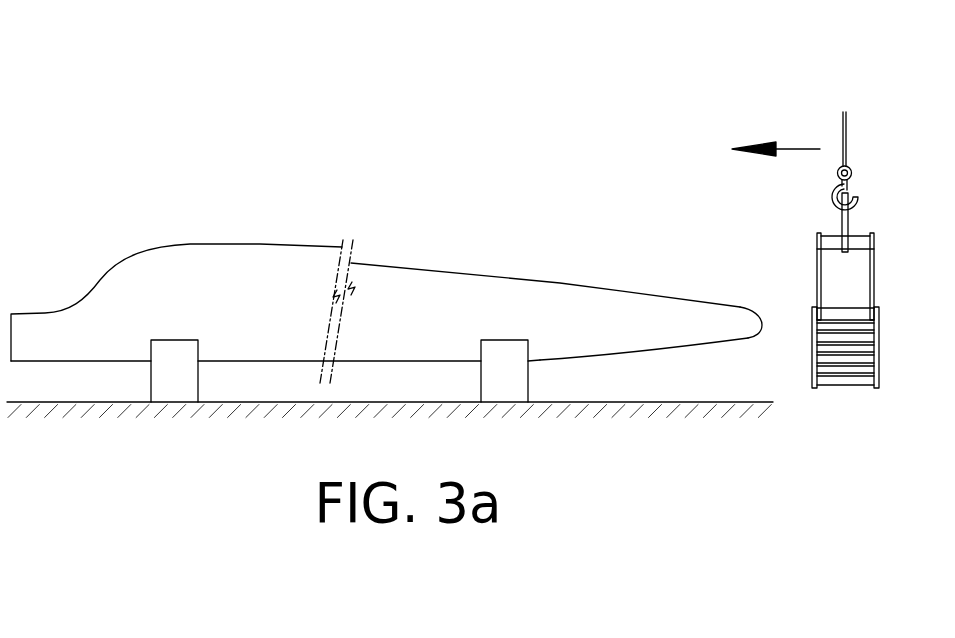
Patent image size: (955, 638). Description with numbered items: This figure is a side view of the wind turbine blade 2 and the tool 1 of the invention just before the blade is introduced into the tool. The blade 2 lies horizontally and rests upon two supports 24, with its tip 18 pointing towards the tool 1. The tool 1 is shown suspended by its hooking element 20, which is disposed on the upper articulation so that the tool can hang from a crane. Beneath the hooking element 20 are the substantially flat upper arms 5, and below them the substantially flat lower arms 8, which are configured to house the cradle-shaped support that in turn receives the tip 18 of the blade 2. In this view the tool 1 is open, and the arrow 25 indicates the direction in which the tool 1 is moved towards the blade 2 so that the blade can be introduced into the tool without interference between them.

The tool 1 is at (833, 250).
The wind turbine blade 2 is at (386, 264).
The upper arms 5 is at (818, 277).
The lower arms 8 is at (813, 338).
The tip 18 is at (700, 318).
The hooking element 20 is at (840, 223).
The supports 24 is at (172, 378).
The arrow 25 is at (788, 148).